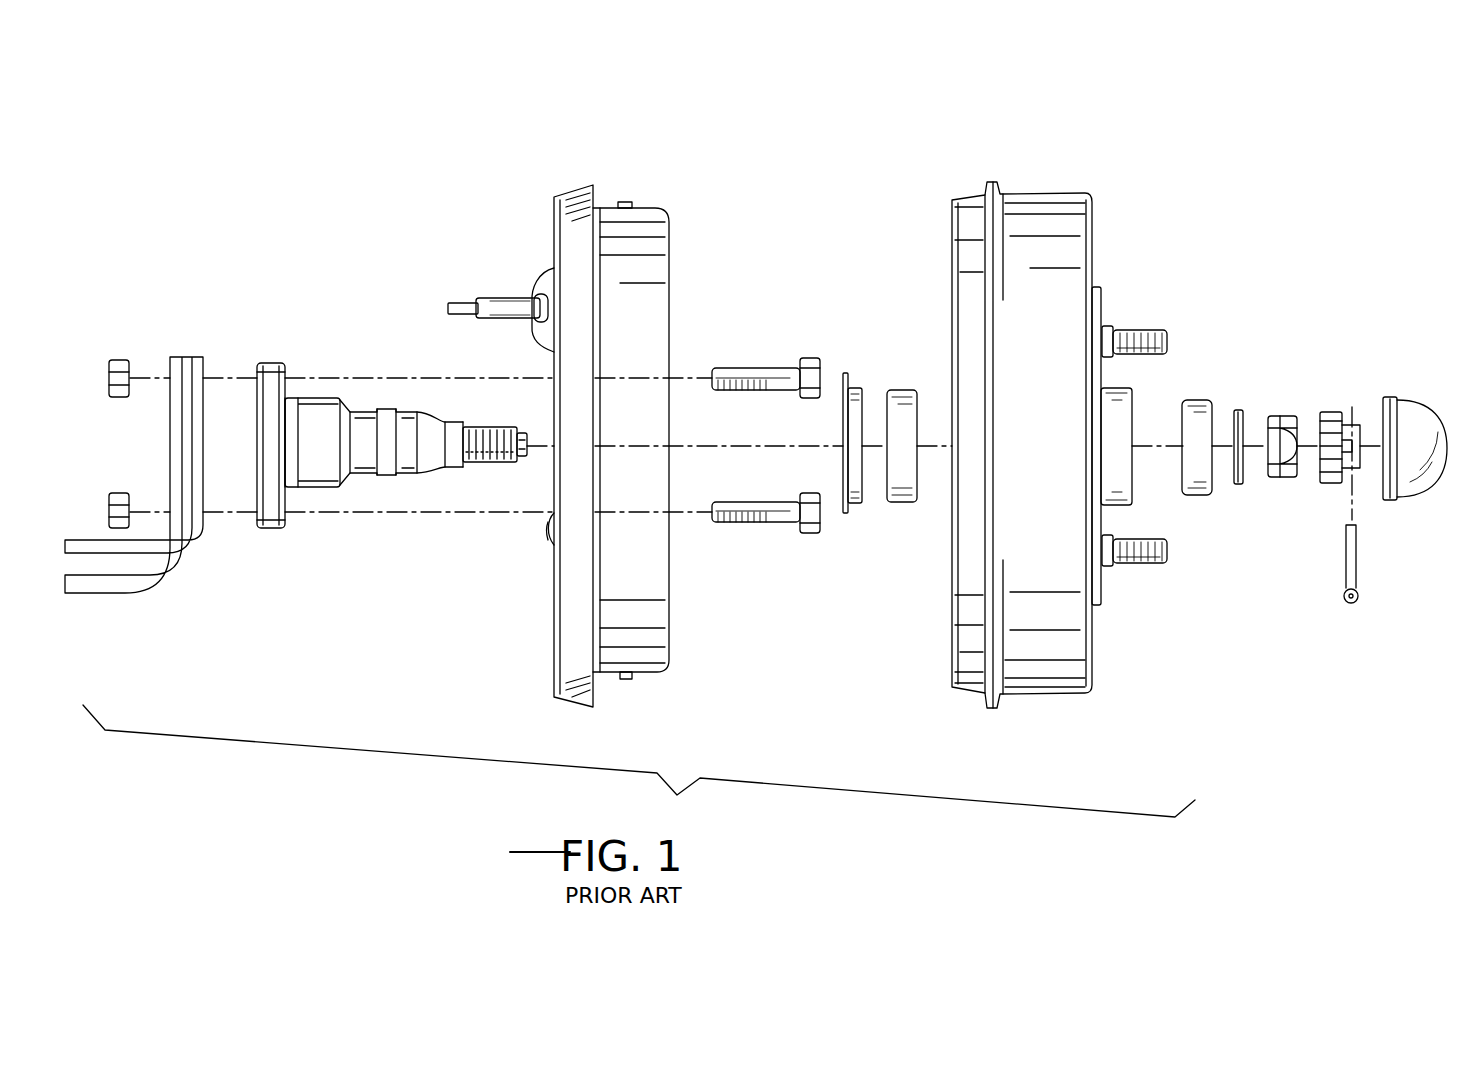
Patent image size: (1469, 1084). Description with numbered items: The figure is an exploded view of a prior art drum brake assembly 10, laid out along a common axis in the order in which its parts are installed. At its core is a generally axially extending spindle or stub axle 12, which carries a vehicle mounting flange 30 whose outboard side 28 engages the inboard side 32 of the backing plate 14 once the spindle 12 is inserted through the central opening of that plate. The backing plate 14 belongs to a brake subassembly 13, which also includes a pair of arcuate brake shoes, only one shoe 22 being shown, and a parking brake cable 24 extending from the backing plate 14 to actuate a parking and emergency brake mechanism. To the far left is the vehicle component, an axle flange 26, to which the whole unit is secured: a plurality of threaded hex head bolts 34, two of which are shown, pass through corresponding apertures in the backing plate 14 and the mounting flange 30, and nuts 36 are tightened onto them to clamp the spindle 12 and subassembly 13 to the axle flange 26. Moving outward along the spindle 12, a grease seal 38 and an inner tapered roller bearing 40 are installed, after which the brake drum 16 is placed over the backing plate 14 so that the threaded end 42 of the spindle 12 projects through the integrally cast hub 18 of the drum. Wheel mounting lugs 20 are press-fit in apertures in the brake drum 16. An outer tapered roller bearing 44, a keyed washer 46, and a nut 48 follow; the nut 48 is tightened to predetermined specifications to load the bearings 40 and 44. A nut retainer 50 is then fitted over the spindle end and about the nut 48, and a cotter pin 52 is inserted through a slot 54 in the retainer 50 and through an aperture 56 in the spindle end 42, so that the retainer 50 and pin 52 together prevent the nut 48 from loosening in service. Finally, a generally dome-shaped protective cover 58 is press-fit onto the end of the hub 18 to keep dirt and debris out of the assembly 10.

The drum brake assembly 10 is at (845, 188).
The spindle 12 is at (406, 477).
The brake subassembly 13 is at (584, 437).
The backing plate 14 is at (511, 466).
The brake drum 16 is at (1088, 476).
The hub 18 is at (1118, 387).
The wheel mounting lugs 20 is at (1136, 328).
The brake shoe 22 is at (676, 650).
The parking brake cable 24 is at (455, 297).
The axle flange 26 is at (193, 356).
The outboard side 28 is at (296, 366).
The vehicle mounting flange 30 is at (276, 361).
The inboard side 32 is at (548, 533).
The threaded hex head bolts 34 is at (745, 367).
The nuts 36 is at (120, 358).
The grease seal 38 is at (852, 506).
The inner tapered roller bearing 40 is at (905, 503).
The threaded end 42 is at (502, 392).
The outer tapered roller bearing 44 is at (1200, 497).
The keyed washer 46 is at (1240, 487).
The nut 48 is at (1283, 480).
The nut retainer 50 is at (1330, 410).
The cotter pin 52 is at (1358, 575).
The slot 54 is at (1361, 440).
The aperture 56 is at (522, 460).
The protective cover 58 is at (1416, 492).